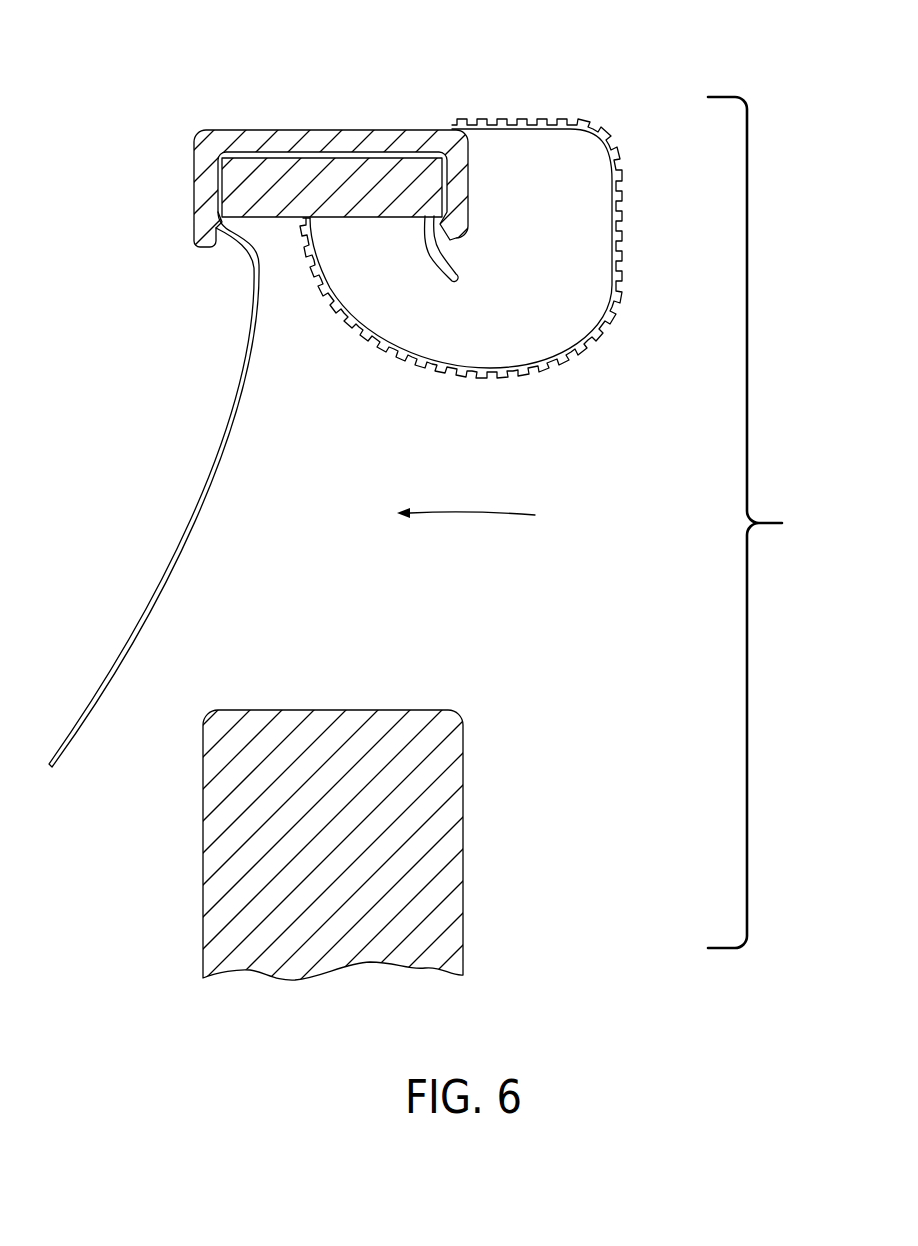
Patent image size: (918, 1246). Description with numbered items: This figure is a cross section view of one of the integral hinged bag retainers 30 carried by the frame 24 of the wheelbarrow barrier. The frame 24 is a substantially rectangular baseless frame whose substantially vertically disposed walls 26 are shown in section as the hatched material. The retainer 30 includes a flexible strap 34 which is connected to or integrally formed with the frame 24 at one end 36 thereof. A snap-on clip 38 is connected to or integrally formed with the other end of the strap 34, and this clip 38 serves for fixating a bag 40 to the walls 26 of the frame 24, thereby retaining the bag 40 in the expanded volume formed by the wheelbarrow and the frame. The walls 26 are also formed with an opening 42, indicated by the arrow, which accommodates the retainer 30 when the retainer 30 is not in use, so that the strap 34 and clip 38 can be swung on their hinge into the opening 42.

The hinged bag retainer 30 is at (534, 68).
The flexible strap 34 is at (622, 238).
The end of strap 36 is at (311, 222).
The snap-on clip 38 is at (360, 137).
The frame 24 is at (387, 190).
The walls 26 is at (432, 765).
The bag 40 is at (205, 462).
The opening 42 is at (488, 518).